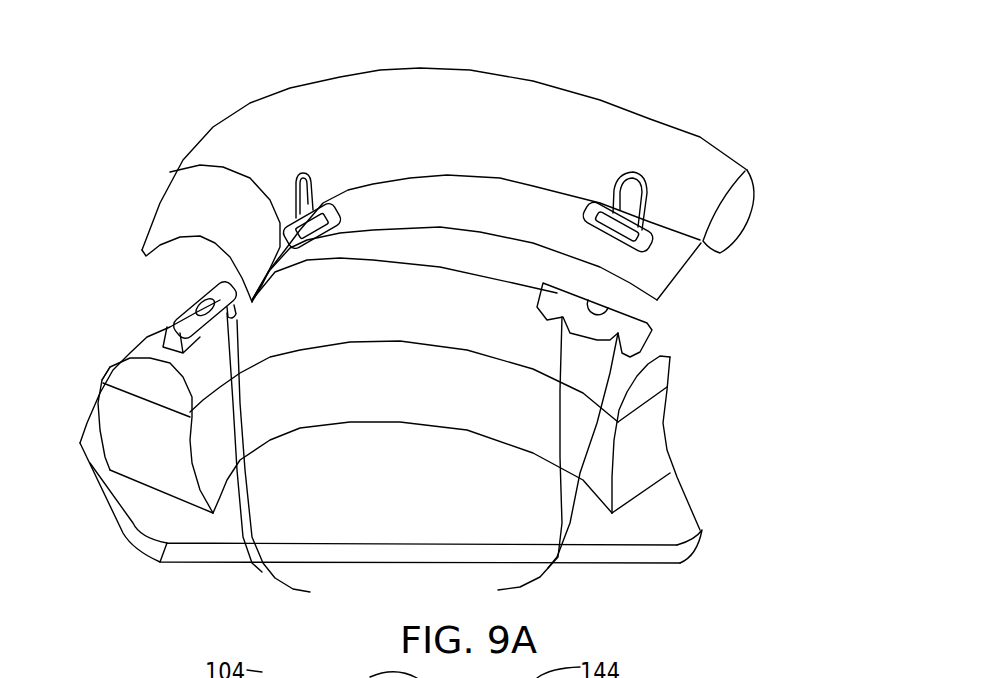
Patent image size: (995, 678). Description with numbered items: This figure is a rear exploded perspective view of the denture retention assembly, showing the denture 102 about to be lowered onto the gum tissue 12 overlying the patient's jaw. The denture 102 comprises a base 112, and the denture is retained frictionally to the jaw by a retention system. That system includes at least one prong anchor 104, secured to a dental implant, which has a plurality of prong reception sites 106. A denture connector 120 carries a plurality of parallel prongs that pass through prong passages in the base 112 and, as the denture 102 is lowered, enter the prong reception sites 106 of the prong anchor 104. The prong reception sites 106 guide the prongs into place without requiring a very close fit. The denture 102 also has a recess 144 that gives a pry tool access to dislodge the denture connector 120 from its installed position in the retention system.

The gum tissue 12 is at (684, 447).
The denture 102 is at (491, 175).
The prong anchor 104 is at (203, 282).
The prong reception sites 106 is at (422, 459).
The base 112 is at (527, 87).
The denture connector 120 is at (352, 239).
The recess 144 is at (782, 186).